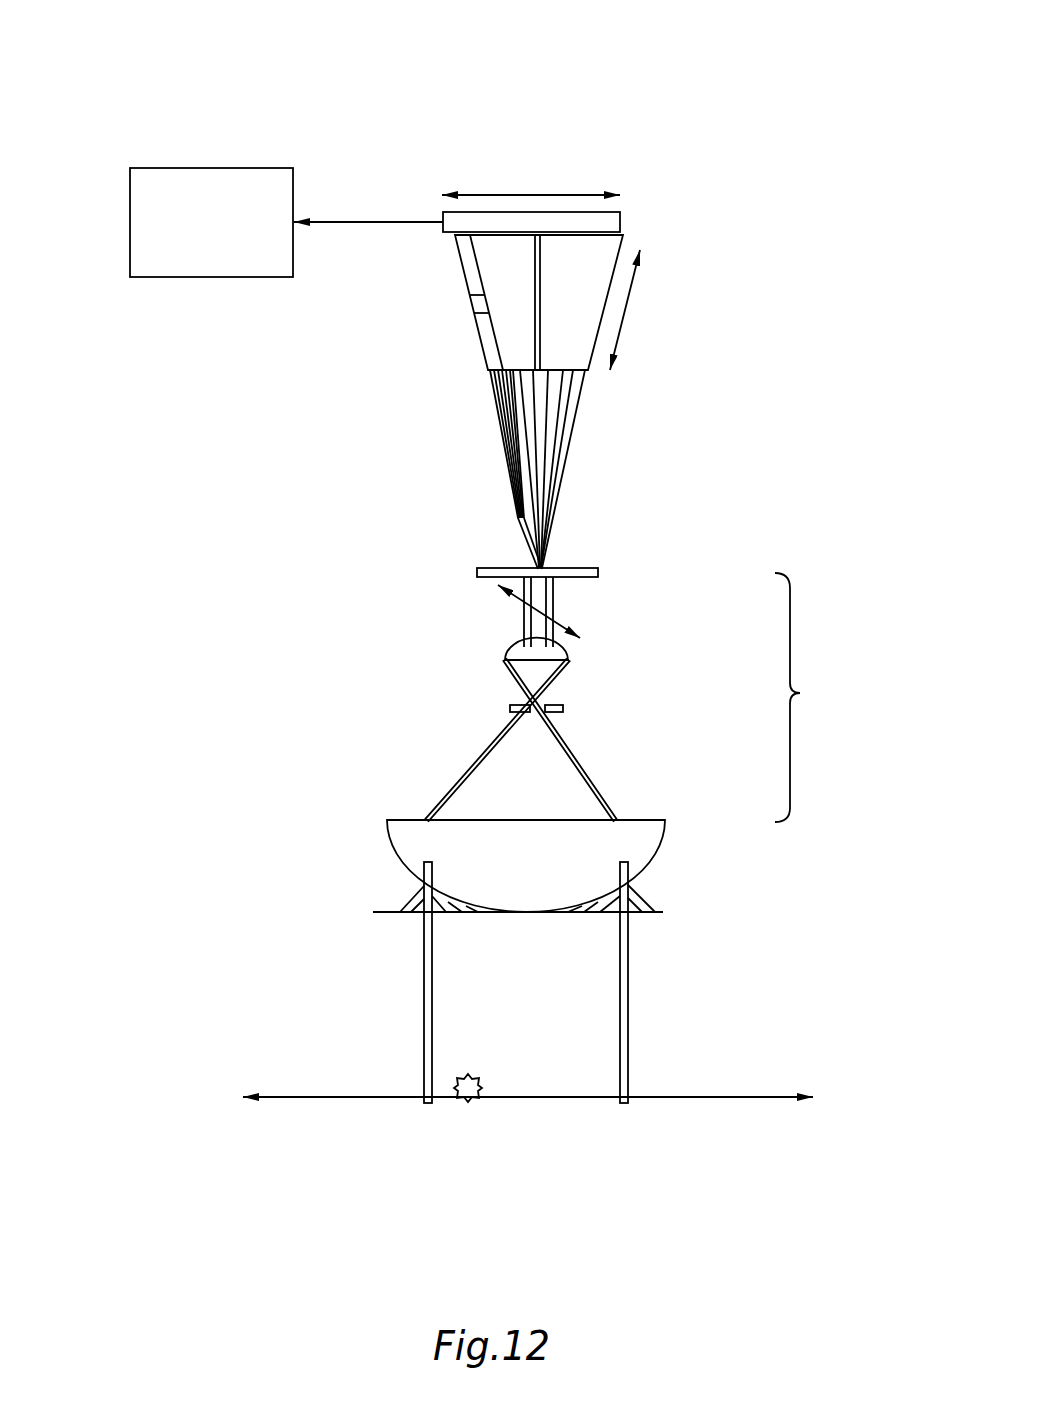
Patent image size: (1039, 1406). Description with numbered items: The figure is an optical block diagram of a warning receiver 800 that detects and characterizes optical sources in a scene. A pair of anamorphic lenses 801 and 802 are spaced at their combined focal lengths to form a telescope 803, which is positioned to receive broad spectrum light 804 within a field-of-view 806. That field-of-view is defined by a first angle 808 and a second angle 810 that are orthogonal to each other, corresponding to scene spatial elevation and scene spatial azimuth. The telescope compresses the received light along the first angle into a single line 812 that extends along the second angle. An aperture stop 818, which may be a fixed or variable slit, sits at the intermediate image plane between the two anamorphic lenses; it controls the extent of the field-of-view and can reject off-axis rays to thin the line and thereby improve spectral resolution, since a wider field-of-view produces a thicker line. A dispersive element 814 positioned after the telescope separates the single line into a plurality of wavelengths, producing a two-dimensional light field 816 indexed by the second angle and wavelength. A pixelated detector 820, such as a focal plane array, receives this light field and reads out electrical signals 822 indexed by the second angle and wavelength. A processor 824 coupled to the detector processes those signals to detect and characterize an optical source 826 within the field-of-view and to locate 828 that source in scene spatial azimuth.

The warning receiver 800 is at (112, 40).
The anamorphic lens 801 is at (640, 842).
The anamorphic lens 802 is at (515, 655).
The telescope 803 is at (633, 697).
The broad spectrum light 804 is at (422, 962).
The field-of-view 806 is at (850, 942).
The first angle 808 is at (525, 1098).
The second angle 810 is at (628, 310).
The single line 812 is at (505, 590).
The dispersive element 814 is at (585, 567).
The two-dimensional light field 816 is at (562, 443).
The aperture stop 818 is at (566, 708).
The pixelated detector 820 is at (612, 222).
The electrical signals 822 is at (380, 219).
The processor 824 is at (213, 166).
The optical source 826 is at (468, 1074).
The locate 828 is at (475, 300).